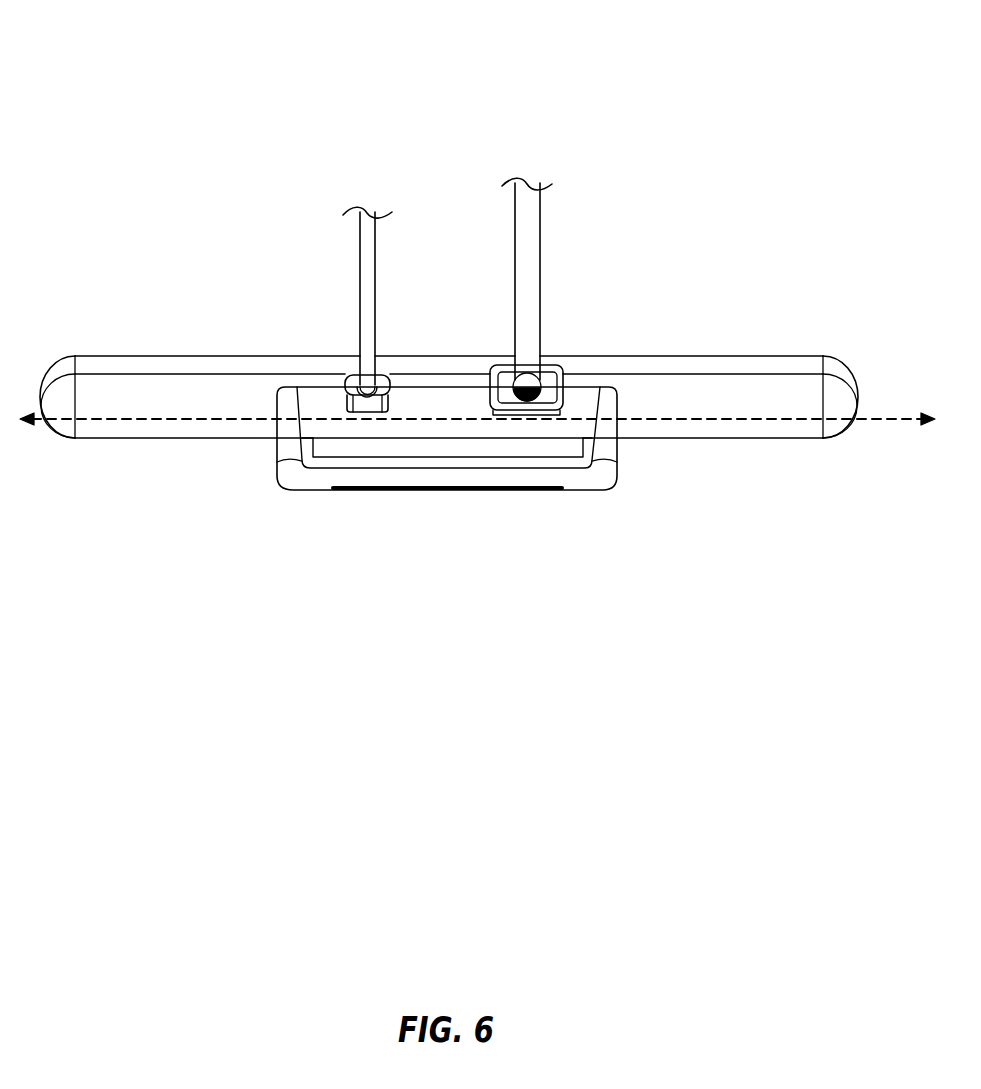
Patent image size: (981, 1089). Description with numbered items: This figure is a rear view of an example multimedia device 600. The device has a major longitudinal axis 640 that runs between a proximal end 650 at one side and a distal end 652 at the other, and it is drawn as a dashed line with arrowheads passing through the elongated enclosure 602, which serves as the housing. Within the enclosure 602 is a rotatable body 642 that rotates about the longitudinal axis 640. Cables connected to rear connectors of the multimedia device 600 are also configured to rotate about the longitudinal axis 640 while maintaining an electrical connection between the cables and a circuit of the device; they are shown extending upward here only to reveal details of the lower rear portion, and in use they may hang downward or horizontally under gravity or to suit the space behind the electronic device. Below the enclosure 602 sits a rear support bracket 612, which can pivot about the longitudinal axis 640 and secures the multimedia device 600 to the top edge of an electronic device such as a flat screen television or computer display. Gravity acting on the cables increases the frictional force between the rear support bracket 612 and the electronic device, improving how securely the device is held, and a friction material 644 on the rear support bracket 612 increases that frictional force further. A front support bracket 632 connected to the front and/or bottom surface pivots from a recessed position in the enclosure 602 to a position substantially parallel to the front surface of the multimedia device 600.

The multimedia device 600 is at (232, 92).
The enclosure 602 is at (121, 356).
The rear support bracket 612 is at (303, 491).
The front support bracket 632 is at (575, 459).
The major longitudinal axis 640 is at (906, 419).
The rotatable body 642 is at (466, 408).
The friction material 644 is at (408, 491).
The proximal end 650 is at (55, 456).
The distal end 652 is at (845, 456).